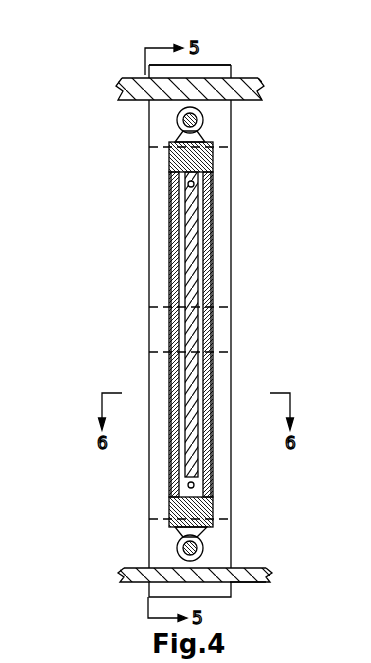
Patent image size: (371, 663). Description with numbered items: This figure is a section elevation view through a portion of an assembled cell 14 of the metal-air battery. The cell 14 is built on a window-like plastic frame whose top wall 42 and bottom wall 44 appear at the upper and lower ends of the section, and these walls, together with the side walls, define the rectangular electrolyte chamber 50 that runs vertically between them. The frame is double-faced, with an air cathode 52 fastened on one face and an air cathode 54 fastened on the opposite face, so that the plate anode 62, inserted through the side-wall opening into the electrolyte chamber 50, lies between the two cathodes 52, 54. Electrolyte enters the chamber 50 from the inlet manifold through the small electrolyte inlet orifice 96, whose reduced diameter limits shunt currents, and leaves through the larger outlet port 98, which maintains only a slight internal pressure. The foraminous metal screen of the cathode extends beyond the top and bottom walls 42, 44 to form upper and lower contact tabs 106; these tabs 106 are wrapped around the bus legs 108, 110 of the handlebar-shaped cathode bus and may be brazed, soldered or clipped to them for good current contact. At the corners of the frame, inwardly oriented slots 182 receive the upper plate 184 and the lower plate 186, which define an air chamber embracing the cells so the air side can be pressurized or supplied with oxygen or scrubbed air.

The cell 14 is at (86, 94).
The top wall 42 is at (212, 143).
The bottom wall 44 is at (213, 510).
The electrolyte chamber 50 is at (199, 333).
The air cathode 52 is at (176, 248).
The air cathode 54 is at (213, 265).
The plate anode 62 is at (204, 222).
The electrolyte inlet orifice 96 is at (194, 486).
The outlet port 98 is at (195, 183).
The contact tab 106 is at (172, 142).
The bus leg 108 is at (203, 120).
The bus leg 110 is at (203, 548).
The slot 182 is at (172, 572).
The upper plate 184 is at (247, 84).
The lower plate 186 is at (253, 573).